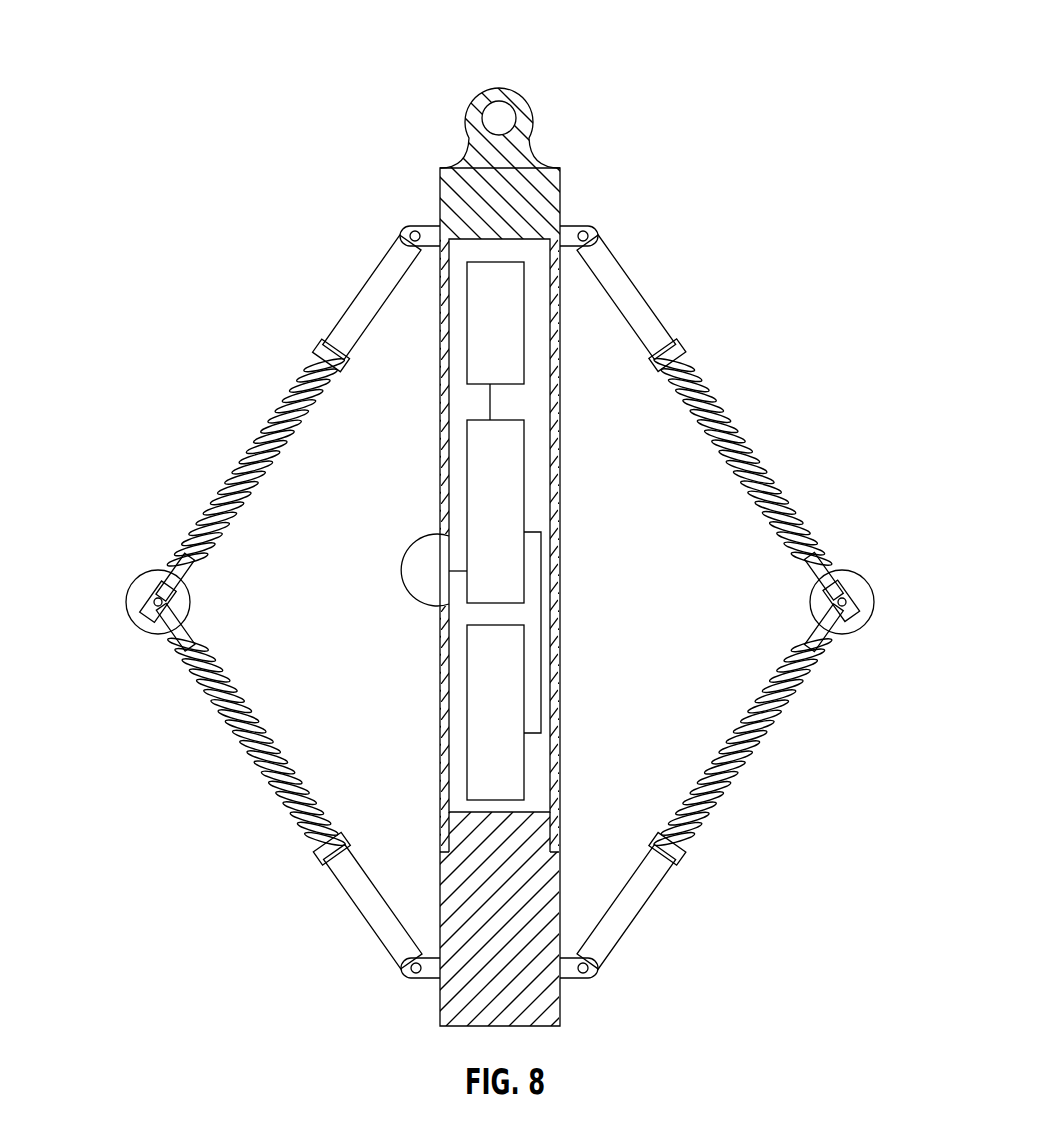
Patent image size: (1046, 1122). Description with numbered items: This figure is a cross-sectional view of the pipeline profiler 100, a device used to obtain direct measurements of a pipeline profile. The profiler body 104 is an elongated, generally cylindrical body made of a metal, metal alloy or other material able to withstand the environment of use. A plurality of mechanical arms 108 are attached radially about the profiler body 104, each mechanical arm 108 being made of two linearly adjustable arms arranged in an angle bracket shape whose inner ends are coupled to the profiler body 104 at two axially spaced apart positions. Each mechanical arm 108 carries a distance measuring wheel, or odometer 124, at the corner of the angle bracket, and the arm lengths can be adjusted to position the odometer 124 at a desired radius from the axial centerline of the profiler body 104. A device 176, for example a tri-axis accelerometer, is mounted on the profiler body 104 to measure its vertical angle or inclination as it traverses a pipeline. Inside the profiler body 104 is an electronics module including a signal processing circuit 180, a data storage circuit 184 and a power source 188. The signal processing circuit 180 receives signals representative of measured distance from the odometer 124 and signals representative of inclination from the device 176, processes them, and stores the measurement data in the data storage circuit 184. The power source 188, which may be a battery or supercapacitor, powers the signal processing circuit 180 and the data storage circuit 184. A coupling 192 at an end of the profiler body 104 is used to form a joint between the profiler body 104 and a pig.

The pipeline profiler 100 is at (503, 76).
The profiler body 104 is at (557, 556).
The mechanical arm 108 is at (352, 293).
The distance measuring wheel 124 is at (126, 600).
The device for measuring vertical angle 176 is at (408, 567).
The signal processing circuit 180 is at (512, 520).
The data storage circuit 184 is at (512, 715).
The power source 188 is at (512, 335).
The coupling 192 is at (535, 140).